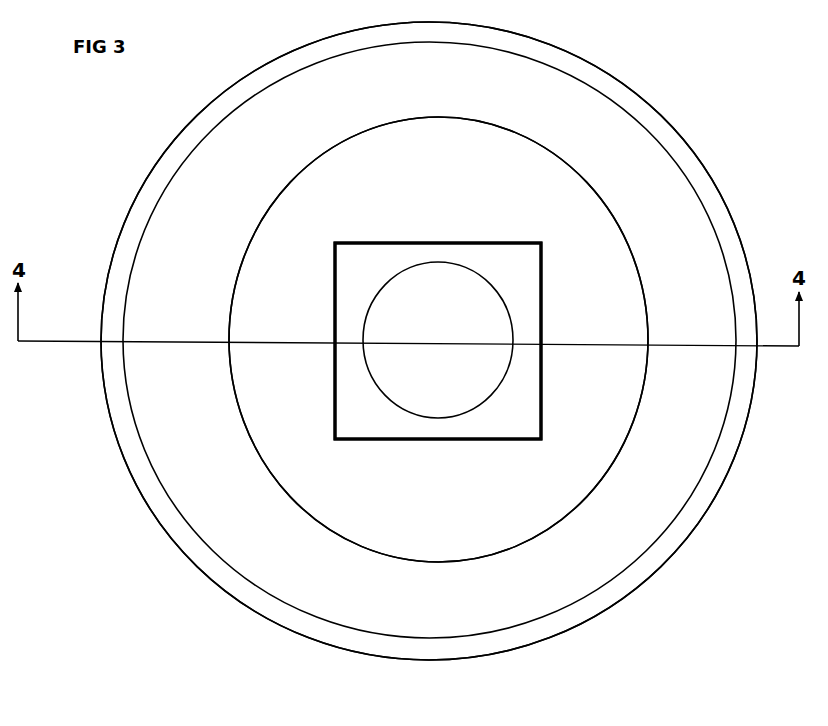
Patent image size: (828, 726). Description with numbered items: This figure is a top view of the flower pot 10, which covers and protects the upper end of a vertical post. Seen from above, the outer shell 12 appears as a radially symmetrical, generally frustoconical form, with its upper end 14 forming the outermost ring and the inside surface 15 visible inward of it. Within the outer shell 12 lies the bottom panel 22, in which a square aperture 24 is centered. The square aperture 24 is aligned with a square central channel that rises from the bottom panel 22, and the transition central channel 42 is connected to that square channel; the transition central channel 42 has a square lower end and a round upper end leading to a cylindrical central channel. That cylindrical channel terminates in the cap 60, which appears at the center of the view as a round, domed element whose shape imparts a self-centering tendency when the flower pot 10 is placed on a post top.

The flower pot 10 is at (100, 211).
The outer shell 12 is at (196, 112).
The upper end 14 is at (585, 70).
The inside surface 15 is at (313, 131).
The bottom panel 22 is at (499, 193).
The square aperture 24 is at (410, 243).
The transition central channel 42 is at (372, 283).
The cap 60 is at (479, 316).